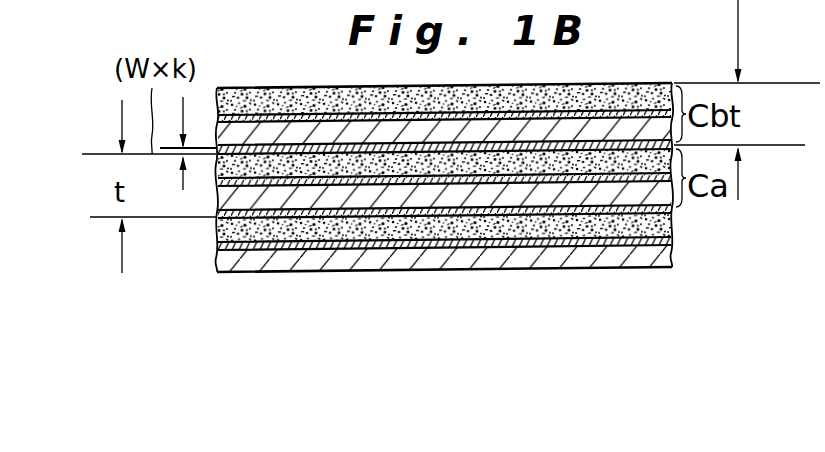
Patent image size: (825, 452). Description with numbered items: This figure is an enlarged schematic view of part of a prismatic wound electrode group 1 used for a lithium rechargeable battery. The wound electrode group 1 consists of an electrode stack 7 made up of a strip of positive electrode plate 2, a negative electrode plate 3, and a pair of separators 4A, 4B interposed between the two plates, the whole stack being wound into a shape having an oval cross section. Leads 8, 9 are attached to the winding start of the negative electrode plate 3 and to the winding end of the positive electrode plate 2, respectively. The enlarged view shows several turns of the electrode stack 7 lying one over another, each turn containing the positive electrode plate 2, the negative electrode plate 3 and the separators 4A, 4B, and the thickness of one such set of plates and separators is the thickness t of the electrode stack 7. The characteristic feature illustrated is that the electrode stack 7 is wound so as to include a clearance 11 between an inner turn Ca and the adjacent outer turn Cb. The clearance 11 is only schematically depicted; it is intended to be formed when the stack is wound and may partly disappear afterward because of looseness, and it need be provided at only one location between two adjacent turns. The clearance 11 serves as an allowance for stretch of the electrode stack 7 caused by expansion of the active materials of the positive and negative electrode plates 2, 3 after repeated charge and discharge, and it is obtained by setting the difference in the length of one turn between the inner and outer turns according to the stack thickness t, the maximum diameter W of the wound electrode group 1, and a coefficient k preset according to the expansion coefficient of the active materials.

The wound electrode group 1 is at (344, 192).
The positive electrode plate 2 is at (463, 163).
The negative electrode plate 3 is at (405, 193).
The separator 4A is at (348, 181).
The separator 4B is at (327, 327).
The electrode stack 7 is at (444, 208).
The clearance 11 is at (328, 151).
The lead 8 is at (117, 14).
The lead 9 is at (604, 8).